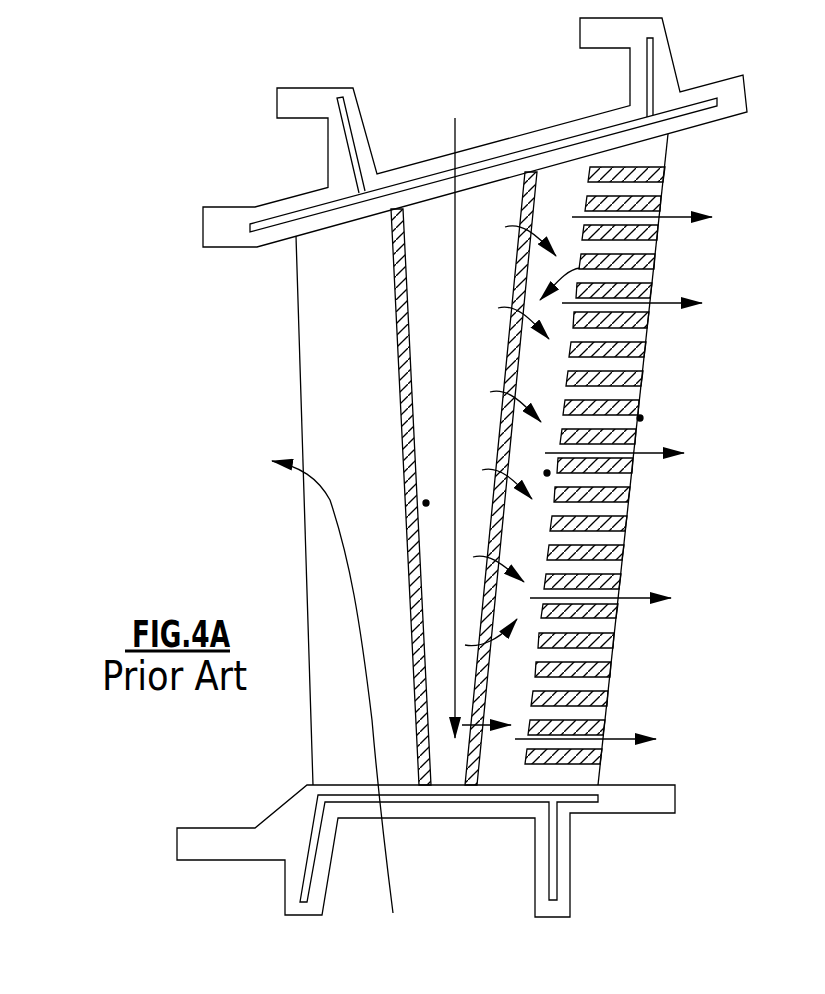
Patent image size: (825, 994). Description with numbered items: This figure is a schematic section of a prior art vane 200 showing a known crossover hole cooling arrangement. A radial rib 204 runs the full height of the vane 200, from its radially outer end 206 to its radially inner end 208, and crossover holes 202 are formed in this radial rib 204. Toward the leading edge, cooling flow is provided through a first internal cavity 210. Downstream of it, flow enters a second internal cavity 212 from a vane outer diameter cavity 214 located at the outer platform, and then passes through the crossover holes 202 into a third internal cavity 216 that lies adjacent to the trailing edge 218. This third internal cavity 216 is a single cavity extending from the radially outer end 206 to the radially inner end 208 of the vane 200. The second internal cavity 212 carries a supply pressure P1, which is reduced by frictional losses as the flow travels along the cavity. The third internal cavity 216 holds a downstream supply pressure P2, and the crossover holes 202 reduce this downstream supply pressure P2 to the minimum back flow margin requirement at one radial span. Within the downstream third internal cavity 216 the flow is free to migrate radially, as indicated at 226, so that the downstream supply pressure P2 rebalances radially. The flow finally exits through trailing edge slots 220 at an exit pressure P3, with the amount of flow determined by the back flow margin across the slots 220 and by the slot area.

The vane 200 is at (170, 165).
The crossover holes 202 is at (508, 93).
The radial rib 204 is at (504, 130).
The radially outer end 206 is at (653, 153).
The radially inner end 208 is at (578, 773).
The first internal cavity 210 is at (322, 258).
The second internal cavity 212 is at (427, 230).
The vane outer diameter cavity 214 is at (610, 83).
The third internal cavity 216 is at (503, 765).
The trailing edge 218 is at (615, 628).
The trailing edge slots 220 is at (623, 397).
The radial flow migration 226 is at (640, 266).
The supply pressure P1 is at (426, 503).
The downstream supply pressure P2 is at (547, 473).
The exit pressure P3 is at (640, 418).